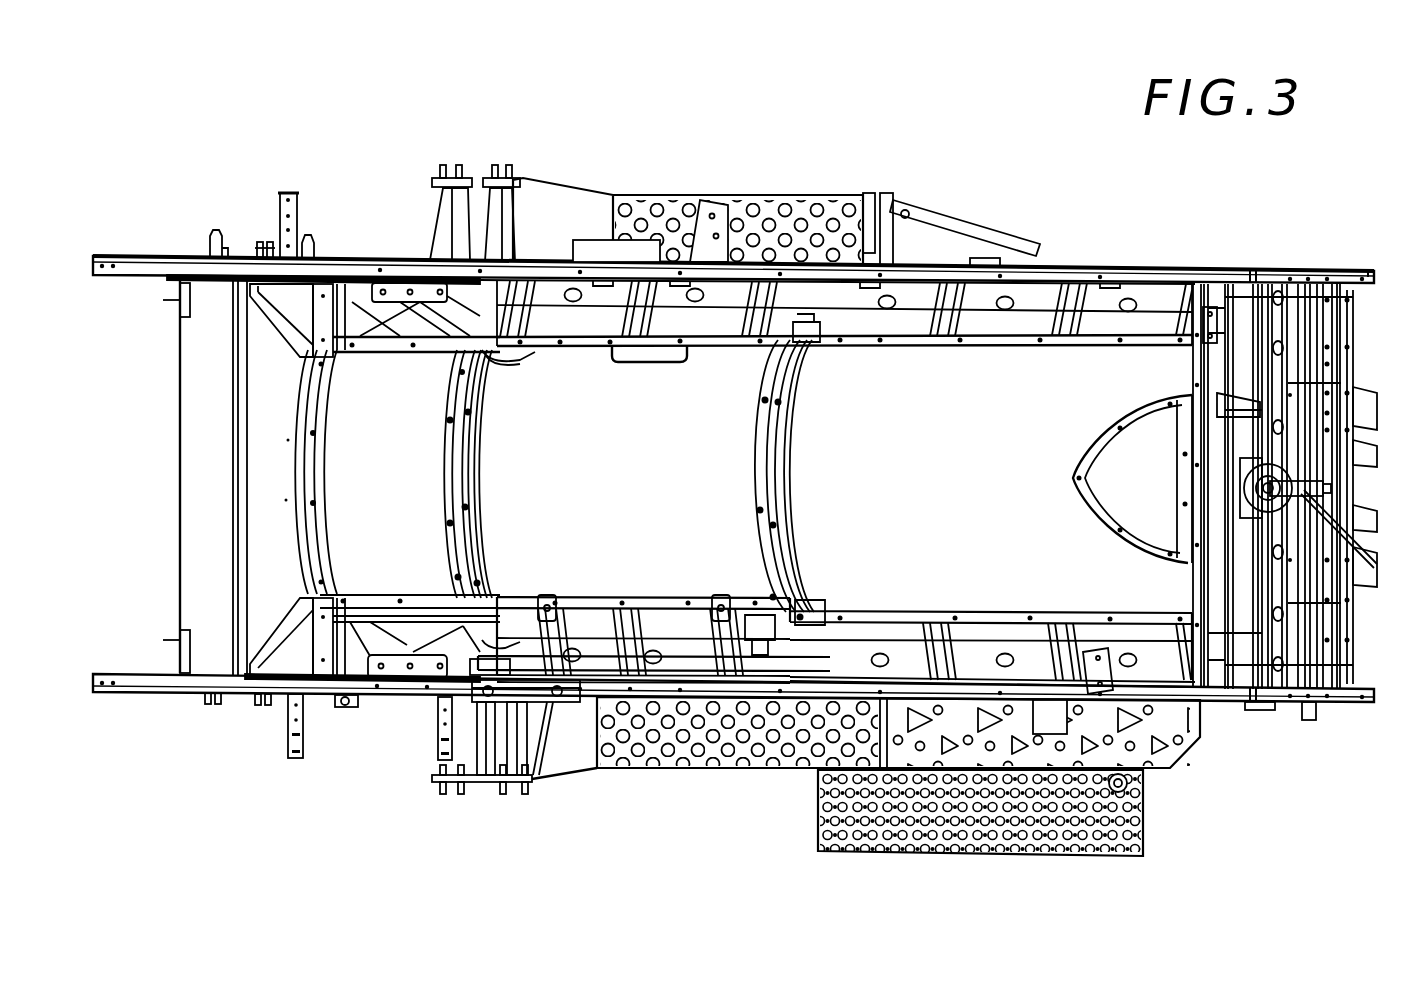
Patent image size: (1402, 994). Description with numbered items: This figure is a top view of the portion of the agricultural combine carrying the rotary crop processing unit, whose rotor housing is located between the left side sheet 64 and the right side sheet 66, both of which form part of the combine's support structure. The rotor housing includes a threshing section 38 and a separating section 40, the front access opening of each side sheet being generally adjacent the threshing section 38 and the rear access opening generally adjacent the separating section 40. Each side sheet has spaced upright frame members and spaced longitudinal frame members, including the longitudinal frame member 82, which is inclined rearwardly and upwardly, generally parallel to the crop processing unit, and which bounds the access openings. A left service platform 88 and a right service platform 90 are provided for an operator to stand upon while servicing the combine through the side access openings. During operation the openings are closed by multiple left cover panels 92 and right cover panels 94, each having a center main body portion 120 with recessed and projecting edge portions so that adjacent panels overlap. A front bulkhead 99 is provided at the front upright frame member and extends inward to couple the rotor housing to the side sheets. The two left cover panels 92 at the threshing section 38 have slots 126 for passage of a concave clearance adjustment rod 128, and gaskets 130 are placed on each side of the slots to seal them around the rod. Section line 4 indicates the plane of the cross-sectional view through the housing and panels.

The section line 4- 4 is at (1007, 182).
The threshing section 38 is at (606, 485).
The separating section 40 is at (941, 485).
The left side sheet 64 is at (382, 700).
The right side sheet 66 is at (1150, 254).
The longitudinal frame member 82 is at (1107, 282).
The left service platform 88 is at (808, 770).
The right service platform 90 is at (800, 193).
The left cover panels 92 is at (603, 617).
The right cover panels 94 is at (583, 325).
The front bulkhead 99 is at (505, 355).
The center main body portion 120 is at (722, 613).
The slots 126 is at (542, 598).
The concave clearance adjustment rod 128 is at (768, 616).
The gaskets 130 is at (562, 657).